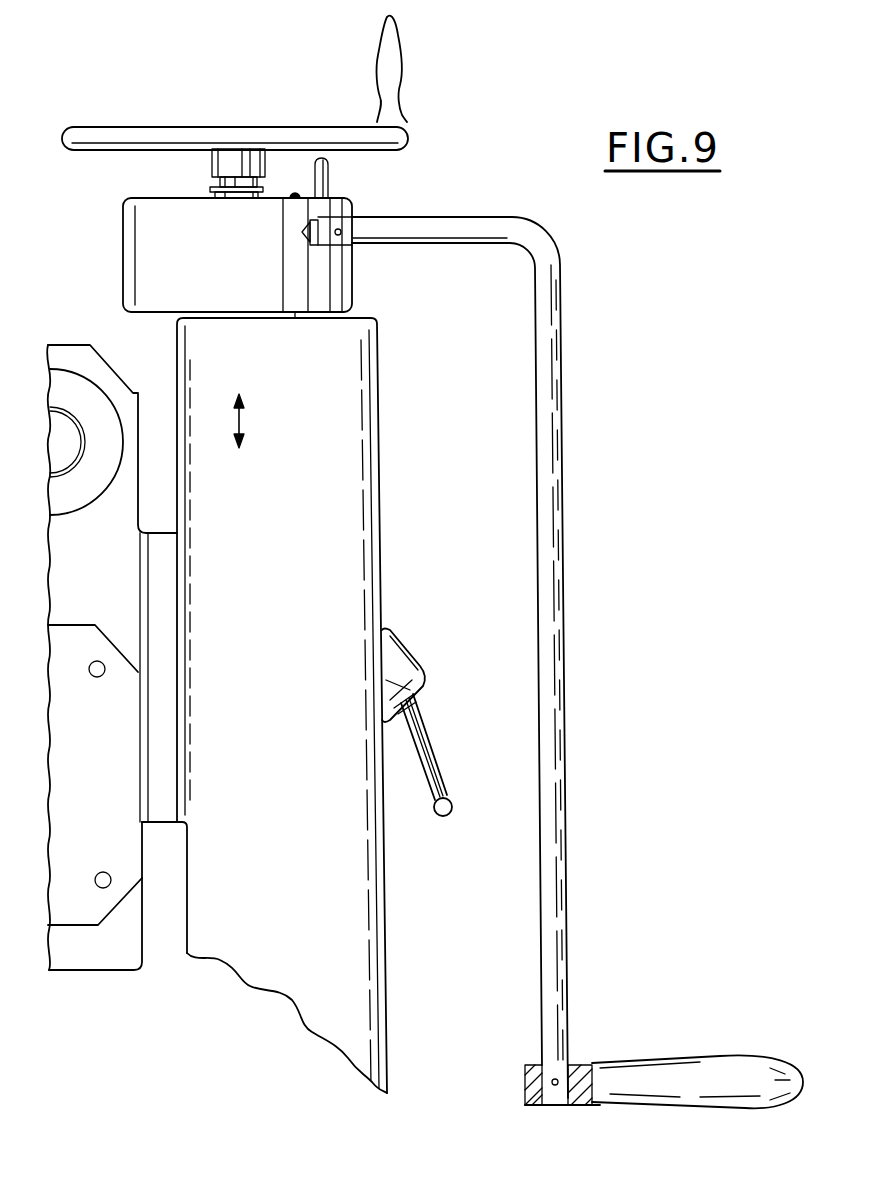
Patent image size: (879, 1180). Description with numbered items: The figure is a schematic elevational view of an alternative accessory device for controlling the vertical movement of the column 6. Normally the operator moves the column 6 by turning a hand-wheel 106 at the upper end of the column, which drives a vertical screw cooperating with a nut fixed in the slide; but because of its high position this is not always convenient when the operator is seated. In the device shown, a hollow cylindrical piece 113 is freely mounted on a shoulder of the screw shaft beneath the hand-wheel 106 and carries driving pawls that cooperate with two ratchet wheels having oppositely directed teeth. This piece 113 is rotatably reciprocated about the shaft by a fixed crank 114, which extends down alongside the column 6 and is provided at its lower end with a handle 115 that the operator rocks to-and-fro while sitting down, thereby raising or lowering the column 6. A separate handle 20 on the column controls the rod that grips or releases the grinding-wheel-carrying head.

The column 6 is at (363, 428).
The handle 20 is at (418, 742).
The hand-wheel 106 is at (157, 137).
The hollow cylindrical piece 113 is at (143, 272).
The fixed crank 114 is at (548, 492).
The handle 115 is at (693, 1070).